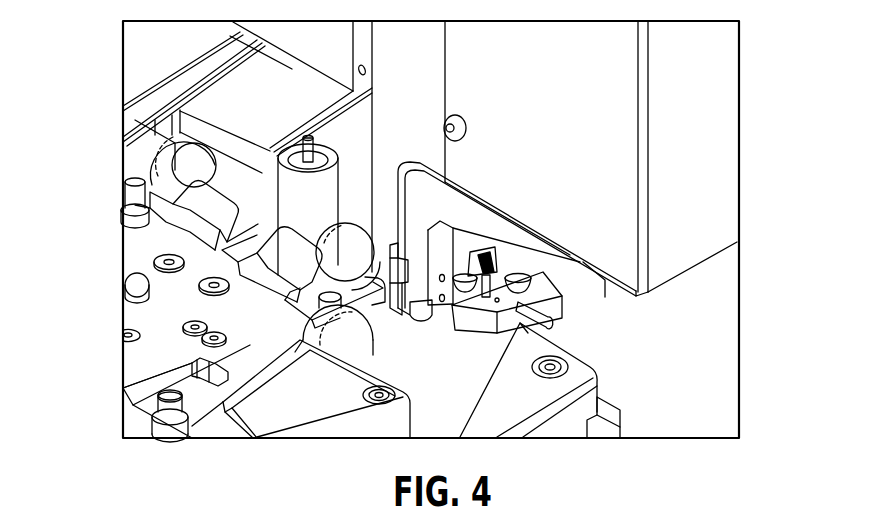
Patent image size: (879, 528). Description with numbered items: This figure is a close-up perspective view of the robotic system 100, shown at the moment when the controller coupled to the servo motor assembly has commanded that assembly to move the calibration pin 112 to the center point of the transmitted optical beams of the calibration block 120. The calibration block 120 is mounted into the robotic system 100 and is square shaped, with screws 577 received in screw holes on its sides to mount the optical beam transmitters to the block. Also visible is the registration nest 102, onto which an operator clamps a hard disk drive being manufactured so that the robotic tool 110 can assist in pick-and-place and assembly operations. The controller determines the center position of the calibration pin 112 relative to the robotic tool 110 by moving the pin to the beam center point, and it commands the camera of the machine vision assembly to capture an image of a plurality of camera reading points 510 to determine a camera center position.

The robotic system 100 is at (112, 232).
The registration nest 102 is at (136, 320).
The robotic tool 110 is at (503, 267).
The calibration pin 112 is at (553, 311).
The calibration block 120 is at (556, 328).
The camera reading points 510 is at (495, 318).
The screws 577 is at (533, 281).